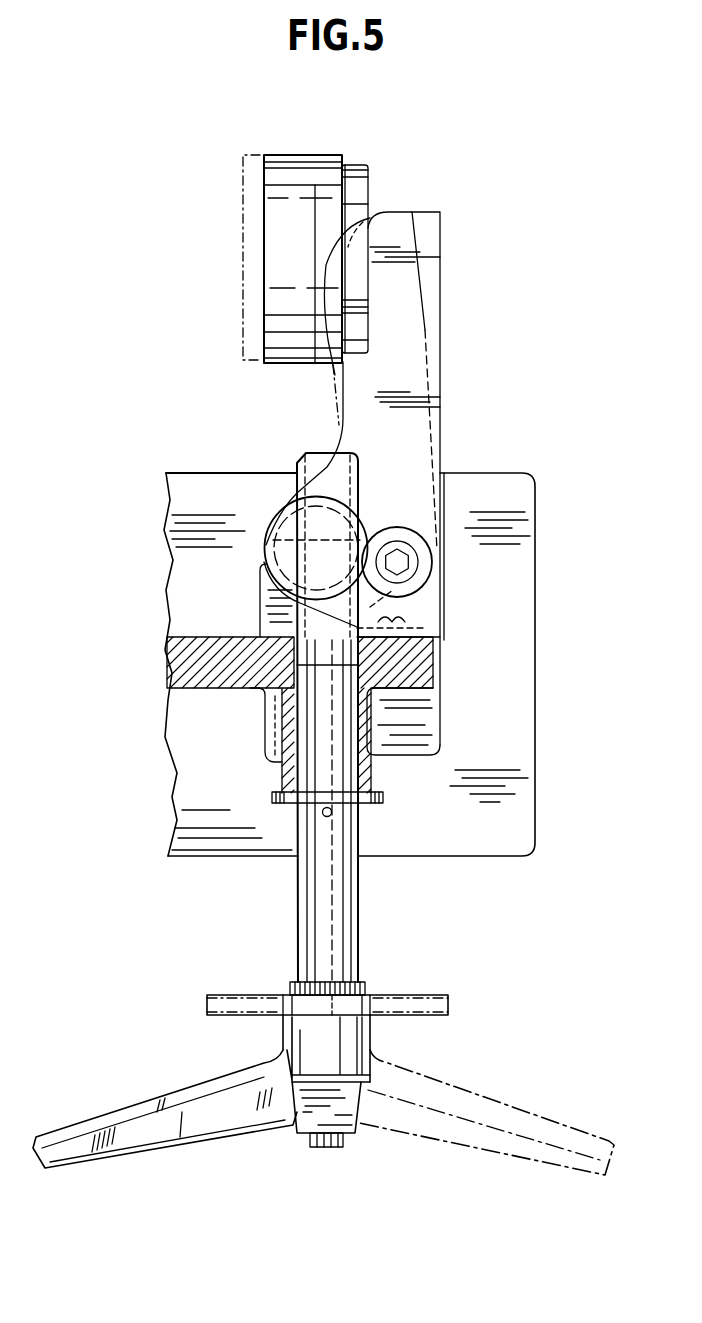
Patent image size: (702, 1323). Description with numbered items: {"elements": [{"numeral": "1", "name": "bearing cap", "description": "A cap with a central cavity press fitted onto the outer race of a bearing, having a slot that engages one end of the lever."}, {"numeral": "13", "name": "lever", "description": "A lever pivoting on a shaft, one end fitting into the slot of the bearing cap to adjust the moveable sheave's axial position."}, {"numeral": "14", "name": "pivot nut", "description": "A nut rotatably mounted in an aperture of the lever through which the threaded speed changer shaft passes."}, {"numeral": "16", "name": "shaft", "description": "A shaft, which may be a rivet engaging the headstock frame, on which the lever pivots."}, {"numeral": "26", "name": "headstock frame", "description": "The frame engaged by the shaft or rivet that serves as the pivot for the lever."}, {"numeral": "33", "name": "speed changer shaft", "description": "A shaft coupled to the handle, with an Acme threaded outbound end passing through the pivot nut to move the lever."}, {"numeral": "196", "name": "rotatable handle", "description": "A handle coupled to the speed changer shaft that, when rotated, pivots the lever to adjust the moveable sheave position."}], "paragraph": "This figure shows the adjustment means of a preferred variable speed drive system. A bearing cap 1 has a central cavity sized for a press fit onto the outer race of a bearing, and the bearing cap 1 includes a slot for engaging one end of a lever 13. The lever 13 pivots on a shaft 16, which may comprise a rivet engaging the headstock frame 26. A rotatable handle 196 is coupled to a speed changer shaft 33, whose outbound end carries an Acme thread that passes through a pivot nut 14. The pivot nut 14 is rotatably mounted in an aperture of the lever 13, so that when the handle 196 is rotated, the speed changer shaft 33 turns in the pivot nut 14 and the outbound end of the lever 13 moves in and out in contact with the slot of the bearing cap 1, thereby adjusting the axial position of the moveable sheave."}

The cylinder 1 is at (300, 155).
The arm 13 is at (442, 328).
The pivot ring 14 is at (265, 548).
The socket head bolt 16 is at (420, 568).
The mounting block 26 is at (497, 828).
The shaft 33 is at (346, 957).
The handle 196 is at (217, 1133).